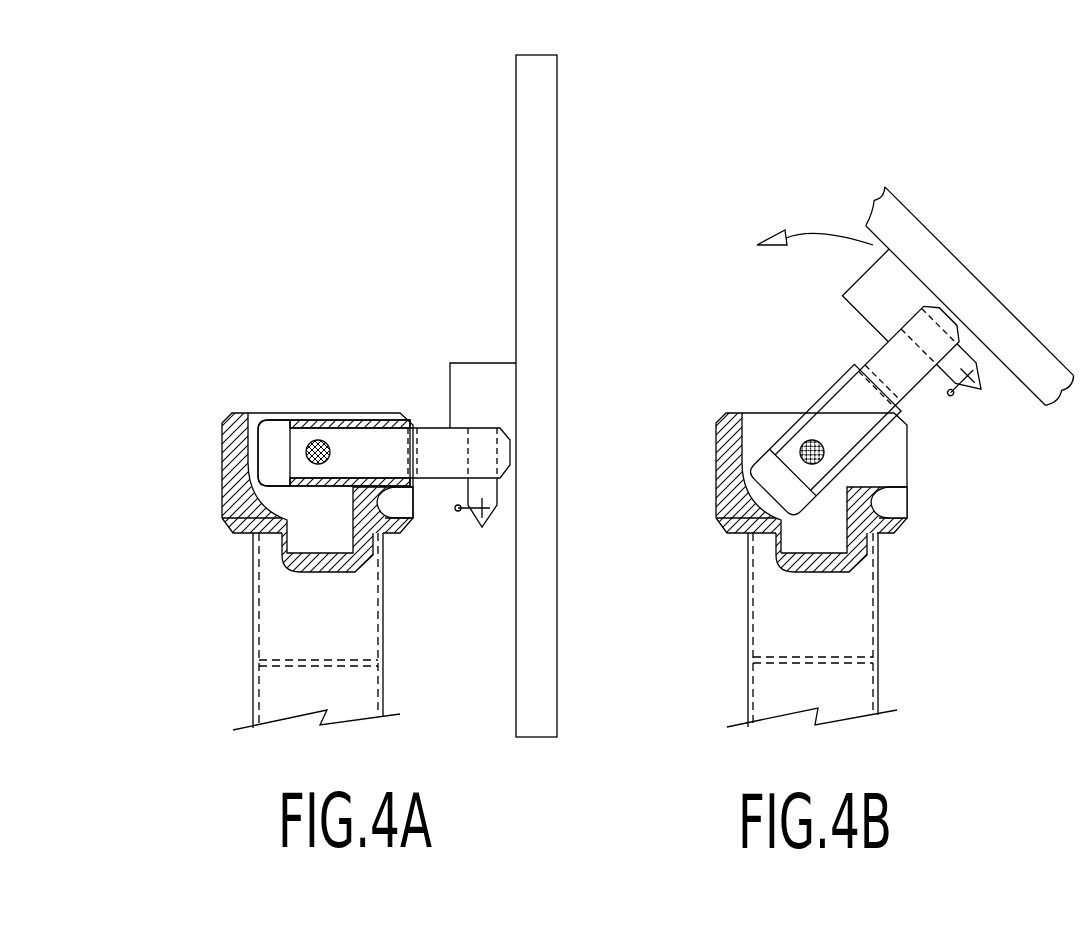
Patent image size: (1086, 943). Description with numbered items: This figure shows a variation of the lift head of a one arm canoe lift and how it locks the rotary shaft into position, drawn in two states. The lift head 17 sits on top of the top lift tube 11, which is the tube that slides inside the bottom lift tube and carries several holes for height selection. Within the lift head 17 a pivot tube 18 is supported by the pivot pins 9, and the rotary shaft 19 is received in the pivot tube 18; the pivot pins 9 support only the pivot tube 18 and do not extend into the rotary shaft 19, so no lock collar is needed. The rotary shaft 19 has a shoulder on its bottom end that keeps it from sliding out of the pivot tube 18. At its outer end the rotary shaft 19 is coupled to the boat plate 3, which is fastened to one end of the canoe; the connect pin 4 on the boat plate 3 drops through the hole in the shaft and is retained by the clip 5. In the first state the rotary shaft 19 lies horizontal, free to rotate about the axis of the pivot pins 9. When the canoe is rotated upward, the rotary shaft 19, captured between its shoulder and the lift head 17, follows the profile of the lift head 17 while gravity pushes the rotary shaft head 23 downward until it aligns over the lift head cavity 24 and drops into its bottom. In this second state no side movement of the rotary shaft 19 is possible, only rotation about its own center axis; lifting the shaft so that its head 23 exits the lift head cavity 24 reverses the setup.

In FIG. 4A, the boat plate 3 is at (558, 164).
In FIG. 4B, the boat plate 3 is at (897, 195).
In FIG. 4A, the connect pin 4 is at (500, 496).
In FIG. 4B, the clip 5 is at (954, 396).
In FIG. 4A, the pivot pins 9 is at (329, 443).
In FIG. 4A, the top lift tube 11 is at (385, 674).
In FIG. 4B, the lift head 17 is at (716, 424).
In FIG. 4A, the pivot tube 18 is at (319, 412).
In FIG. 4A, the rotary shaft 19 is at (439, 481).
In FIG. 4B, the rotary shaft 19 is at (869, 353).
In FIG. 4A, the rotary shaft head 23 is at (271, 423).
In FIG. 4B, the lift head cavity 24 is at (831, 548).